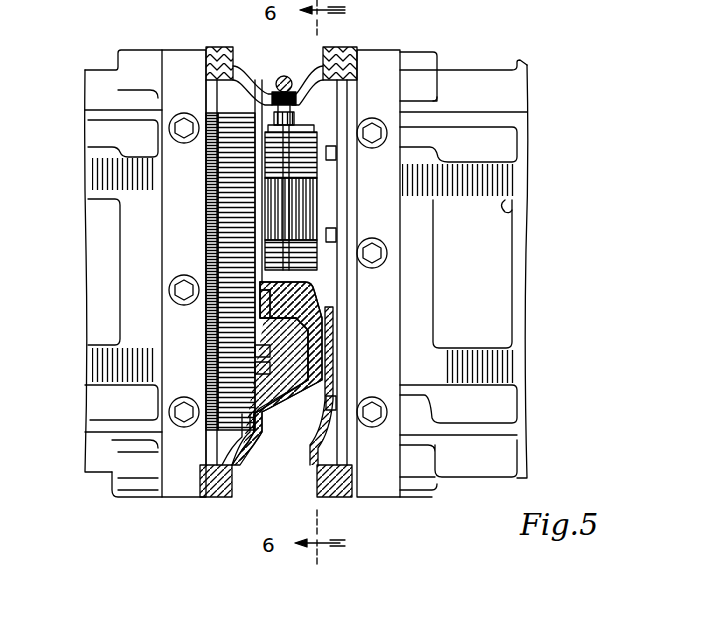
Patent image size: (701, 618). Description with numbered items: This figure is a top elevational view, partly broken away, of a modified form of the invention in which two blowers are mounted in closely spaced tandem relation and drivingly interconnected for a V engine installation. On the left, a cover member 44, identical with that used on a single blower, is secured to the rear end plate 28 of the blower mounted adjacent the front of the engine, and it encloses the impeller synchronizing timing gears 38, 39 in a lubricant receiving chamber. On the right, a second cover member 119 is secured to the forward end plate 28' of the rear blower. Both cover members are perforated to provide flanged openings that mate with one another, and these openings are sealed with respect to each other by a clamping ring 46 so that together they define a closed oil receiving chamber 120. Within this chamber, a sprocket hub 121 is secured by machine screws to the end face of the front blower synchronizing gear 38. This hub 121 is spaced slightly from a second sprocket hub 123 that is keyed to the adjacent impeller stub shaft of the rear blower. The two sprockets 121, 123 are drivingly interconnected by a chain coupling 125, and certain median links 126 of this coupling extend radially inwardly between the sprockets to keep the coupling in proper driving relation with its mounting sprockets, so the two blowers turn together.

The end plate 28 is at (178, 295).
The end plate 28' is at (380, 295).
The timing gear 38 is at (238, 113).
The timing gear 39 is at (306, 380).
The cover member 44 is at (220, 497).
The clamping ring 46 is at (282, 92).
The second cover member 119 is at (318, 480).
The oil receiving chamber 120 is at (335, 284).
The sprocket hub 121 is at (256, 155).
The second sprocket hub 123 is at (300, 172).
The chain coupling 125 is at (318, 226).
The median links 126 is at (290, 120).